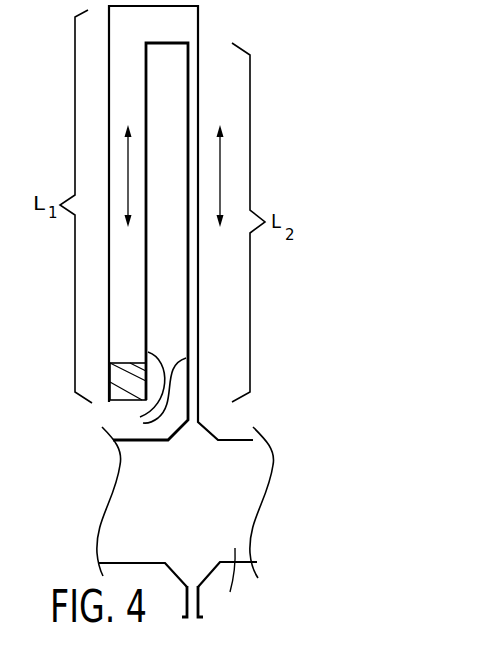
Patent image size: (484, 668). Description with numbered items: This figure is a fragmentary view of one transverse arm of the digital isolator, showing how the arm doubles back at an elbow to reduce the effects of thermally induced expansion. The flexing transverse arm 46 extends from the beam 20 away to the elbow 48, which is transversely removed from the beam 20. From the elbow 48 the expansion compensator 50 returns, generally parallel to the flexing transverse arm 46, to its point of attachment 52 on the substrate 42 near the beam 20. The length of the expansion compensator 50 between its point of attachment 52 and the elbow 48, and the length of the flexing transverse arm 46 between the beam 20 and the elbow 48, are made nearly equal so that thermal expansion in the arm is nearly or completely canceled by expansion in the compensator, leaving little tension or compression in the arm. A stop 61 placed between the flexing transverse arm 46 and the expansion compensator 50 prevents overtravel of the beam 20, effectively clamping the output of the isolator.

The elbow 48 is at (208, 23).
The flexing transverse arm 46 is at (198, 281).
The expansion compensator 50 is at (117, 272).
The point of attachment 52 is at (110, 403).
The stop 61 is at (143, 423).
The substrate 42 is at (310, 438).
The beam 20 is at (212, 603).